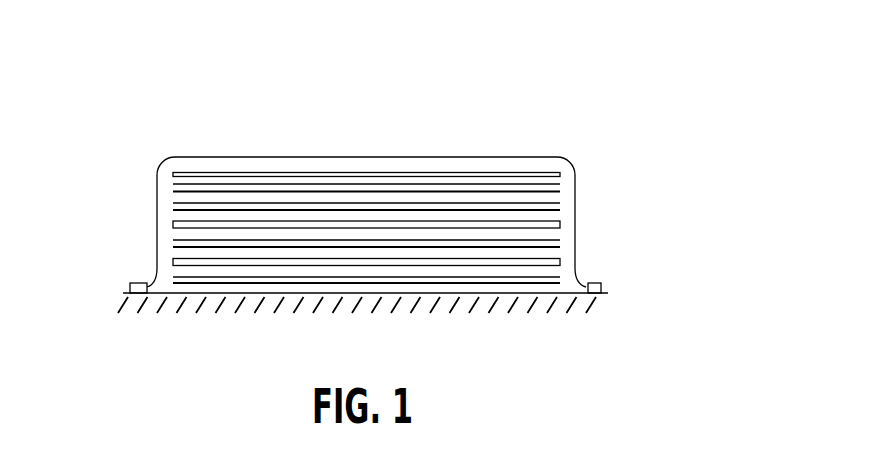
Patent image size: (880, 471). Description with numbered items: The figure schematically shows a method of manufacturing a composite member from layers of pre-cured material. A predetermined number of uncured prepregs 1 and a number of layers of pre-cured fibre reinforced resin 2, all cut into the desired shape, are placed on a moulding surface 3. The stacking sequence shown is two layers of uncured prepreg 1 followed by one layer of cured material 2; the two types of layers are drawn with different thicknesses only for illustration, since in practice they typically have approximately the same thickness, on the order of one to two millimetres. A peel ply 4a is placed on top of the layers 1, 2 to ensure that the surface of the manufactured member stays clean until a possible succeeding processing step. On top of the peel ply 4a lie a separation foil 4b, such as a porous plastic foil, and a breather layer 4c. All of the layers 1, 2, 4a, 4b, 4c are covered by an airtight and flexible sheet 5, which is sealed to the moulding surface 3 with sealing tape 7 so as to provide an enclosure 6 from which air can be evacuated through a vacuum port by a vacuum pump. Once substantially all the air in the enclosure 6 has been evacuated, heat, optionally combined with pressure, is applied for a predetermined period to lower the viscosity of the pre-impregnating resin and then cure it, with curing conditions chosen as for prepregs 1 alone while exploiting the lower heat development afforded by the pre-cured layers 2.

The uncured prepreg 1 is at (560, 280).
The layer of pre-cured fibre reinforced resin 2 is at (173, 263).
The moulding surface 3 is at (238, 302).
The peel ply 4a is at (560, 192).
The separation foil 4b is at (560, 184).
The breather layer 4c is at (573, 168).
The airtight and flexible sheet 5 is at (408, 157).
The enclosure 6 is at (167, 190).
The sealing tape 7 is at (128, 291).